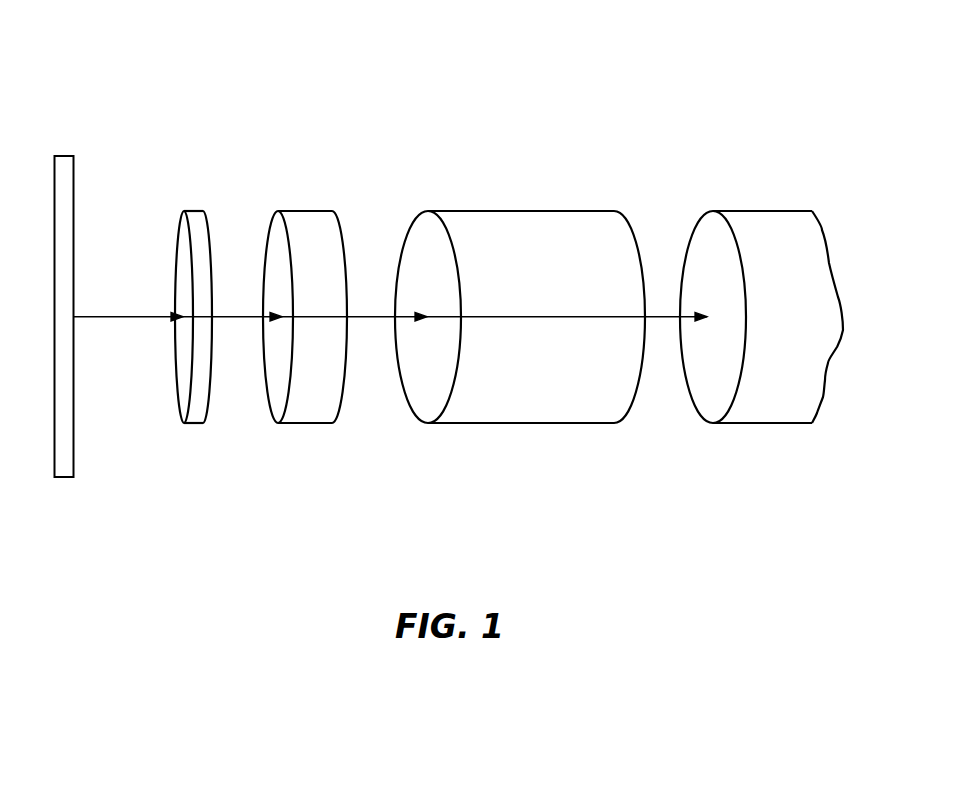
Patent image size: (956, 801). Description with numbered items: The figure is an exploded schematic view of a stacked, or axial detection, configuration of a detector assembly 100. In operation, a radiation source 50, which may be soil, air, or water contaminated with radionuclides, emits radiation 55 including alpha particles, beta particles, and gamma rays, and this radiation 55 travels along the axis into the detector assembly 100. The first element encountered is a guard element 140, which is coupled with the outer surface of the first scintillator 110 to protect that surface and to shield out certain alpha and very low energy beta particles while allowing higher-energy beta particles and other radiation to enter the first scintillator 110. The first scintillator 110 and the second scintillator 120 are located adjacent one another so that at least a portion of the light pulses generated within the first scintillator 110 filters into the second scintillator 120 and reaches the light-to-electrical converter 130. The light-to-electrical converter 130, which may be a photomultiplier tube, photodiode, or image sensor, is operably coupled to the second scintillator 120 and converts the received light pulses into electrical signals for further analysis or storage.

The detector assembly 100 is at (516, 100).
The radiation source 50 is at (62, 478).
The radiation 55 is at (117, 317).
The guard element 140 is at (194, 212).
The first scintillator 110 is at (307, 210).
The second scintillator 120 is at (523, 210).
The light-to-electrical converter 130 is at (765, 210).